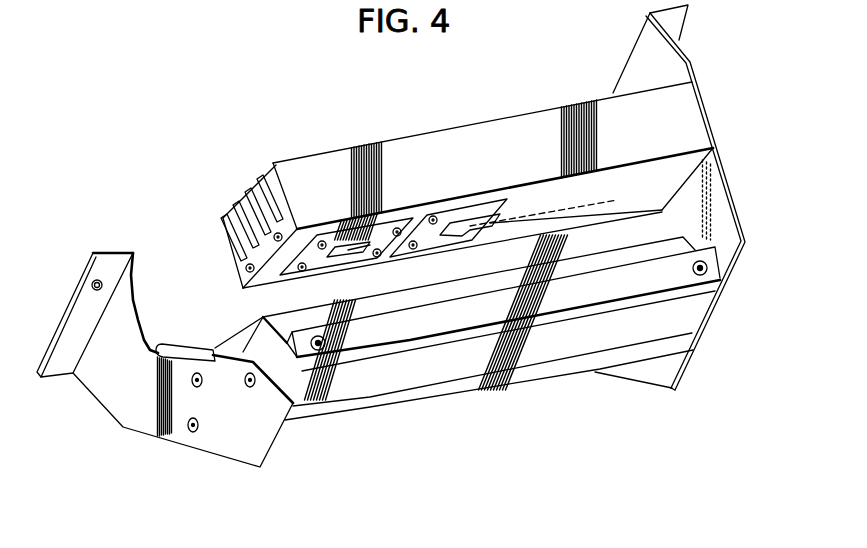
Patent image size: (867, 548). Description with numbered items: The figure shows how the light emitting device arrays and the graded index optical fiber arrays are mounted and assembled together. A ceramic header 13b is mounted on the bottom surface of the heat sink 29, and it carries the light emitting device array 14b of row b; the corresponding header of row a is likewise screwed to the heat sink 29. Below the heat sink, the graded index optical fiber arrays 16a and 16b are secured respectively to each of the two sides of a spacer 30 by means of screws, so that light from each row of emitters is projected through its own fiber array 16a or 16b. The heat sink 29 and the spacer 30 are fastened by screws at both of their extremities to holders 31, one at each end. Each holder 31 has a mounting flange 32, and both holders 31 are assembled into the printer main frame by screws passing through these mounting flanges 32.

The heat sink 29 is at (252, 178).
The spacer 30 is at (320, 398).
The holders 31 is at (100, 376).
The mounting flanges 32 is at (100, 250).
The ceramic header 13b is at (327, 262).
The light emitting device array 14b is at (362, 254).
The graded index optical fiber array 16a is at (457, 387).
The graded index optical fiber array 16b is at (395, 338).